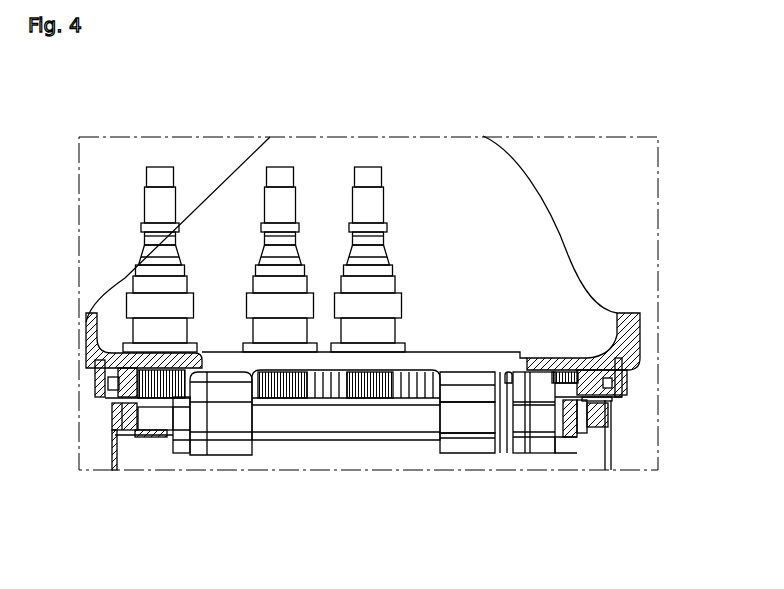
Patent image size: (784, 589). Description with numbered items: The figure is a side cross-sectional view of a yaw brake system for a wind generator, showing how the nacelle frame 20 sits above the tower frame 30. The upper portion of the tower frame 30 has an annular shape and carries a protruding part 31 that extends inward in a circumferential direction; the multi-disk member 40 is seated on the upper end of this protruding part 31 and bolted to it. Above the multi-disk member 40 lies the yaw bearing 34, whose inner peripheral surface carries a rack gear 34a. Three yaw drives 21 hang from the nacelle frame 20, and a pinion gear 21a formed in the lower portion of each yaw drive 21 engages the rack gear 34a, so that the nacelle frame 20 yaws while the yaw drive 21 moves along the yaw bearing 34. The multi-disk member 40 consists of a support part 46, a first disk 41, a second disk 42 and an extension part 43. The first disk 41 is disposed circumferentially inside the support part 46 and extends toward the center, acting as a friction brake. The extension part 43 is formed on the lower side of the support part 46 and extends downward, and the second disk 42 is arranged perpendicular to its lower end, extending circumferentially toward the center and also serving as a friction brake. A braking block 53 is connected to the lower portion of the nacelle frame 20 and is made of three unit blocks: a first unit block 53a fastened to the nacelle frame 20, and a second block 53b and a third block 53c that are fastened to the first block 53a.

The nacelle frame 20 is at (487, 183).
The yaw drive 21 is at (370, 200).
The pinion gear 21a is at (373, 385).
The tower frame 30 is at (128, 453).
The protruding part 31 is at (113, 420).
The yaw bearing 34 is at (113, 403).
The rack gear 34a is at (328, 387).
The multi-disk member 40 is at (656, 421).
The first disk 41 is at (603, 418).
The second disk 42 is at (565, 436).
The extension part 43 is at (598, 410).
The support part 46 is at (623, 392).
The braking block 53 is at (431, 473).
The first unit block 53a is at (452, 393).
The second block 53b is at (462, 422).
The third block 53c is at (472, 442).